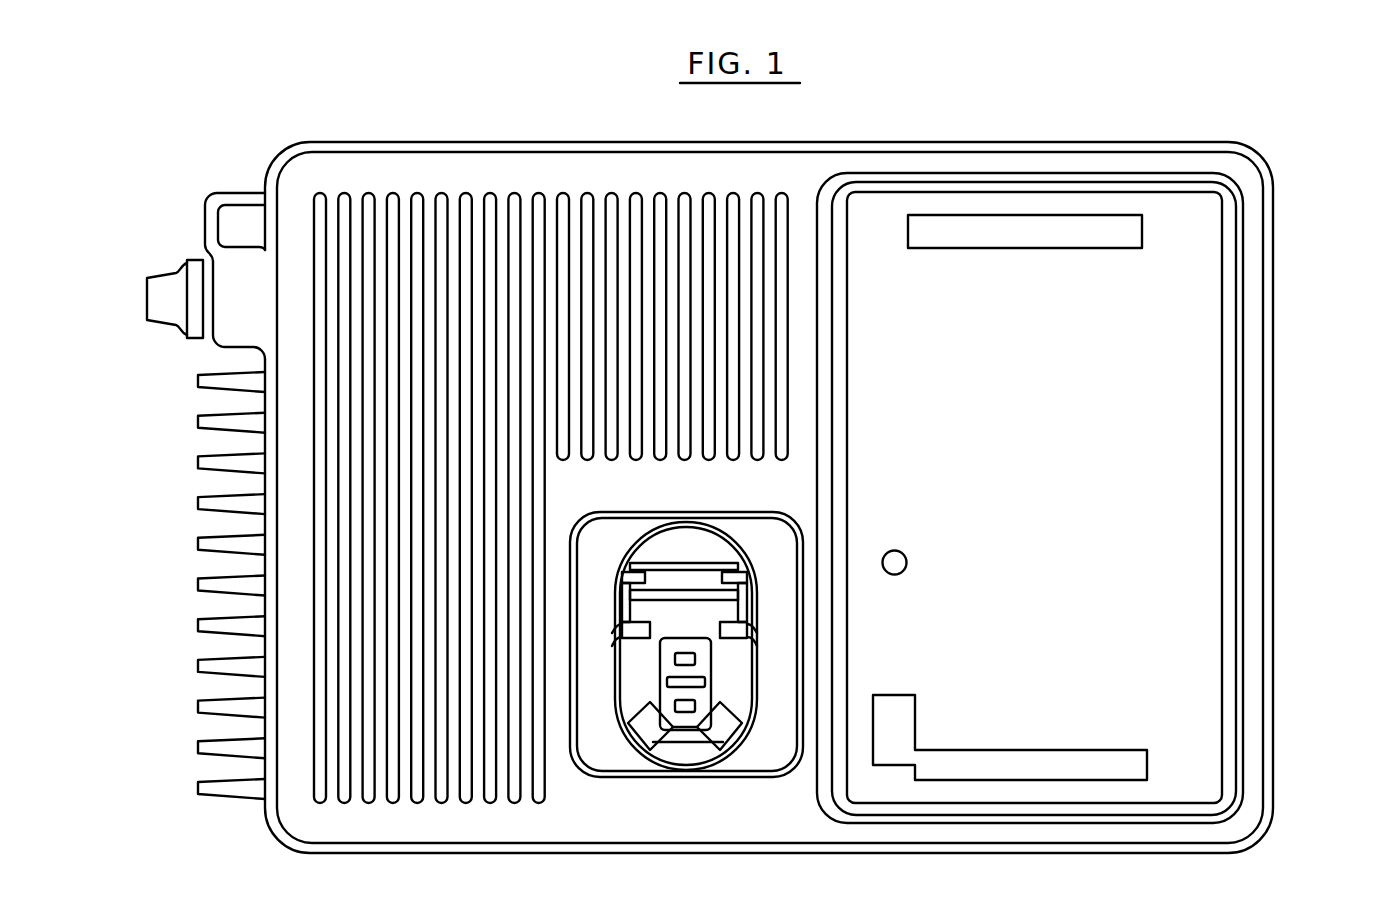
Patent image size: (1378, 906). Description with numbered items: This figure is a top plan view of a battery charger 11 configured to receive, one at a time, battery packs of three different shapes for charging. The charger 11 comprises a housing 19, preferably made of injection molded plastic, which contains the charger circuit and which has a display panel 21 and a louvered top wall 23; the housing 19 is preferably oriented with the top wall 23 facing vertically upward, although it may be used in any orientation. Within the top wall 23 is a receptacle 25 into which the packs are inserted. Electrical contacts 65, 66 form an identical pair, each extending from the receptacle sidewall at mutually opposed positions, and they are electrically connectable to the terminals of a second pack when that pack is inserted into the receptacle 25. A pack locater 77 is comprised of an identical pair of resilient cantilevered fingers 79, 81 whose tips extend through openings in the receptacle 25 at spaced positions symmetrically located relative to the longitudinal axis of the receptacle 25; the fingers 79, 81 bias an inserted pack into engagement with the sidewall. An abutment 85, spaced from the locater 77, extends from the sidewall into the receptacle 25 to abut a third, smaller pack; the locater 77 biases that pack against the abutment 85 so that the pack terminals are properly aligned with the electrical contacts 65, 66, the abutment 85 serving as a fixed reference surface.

The charger 11 is at (985, 106).
The housing 19 is at (1066, 135).
The display panel 21 is at (1210, 383).
The louvered top wall 23 is at (527, 170).
The receptacle 25 is at (723, 610).
The electrical contact 65 is at (632, 630).
The electrical contact 66 is at (748, 627).
The pack locater 77 is at (685, 752).
The resilient cantilevered finger 79 is at (640, 730).
The resilient cantilevered finger 81 is at (728, 730).
The abutment 85 is at (622, 572).